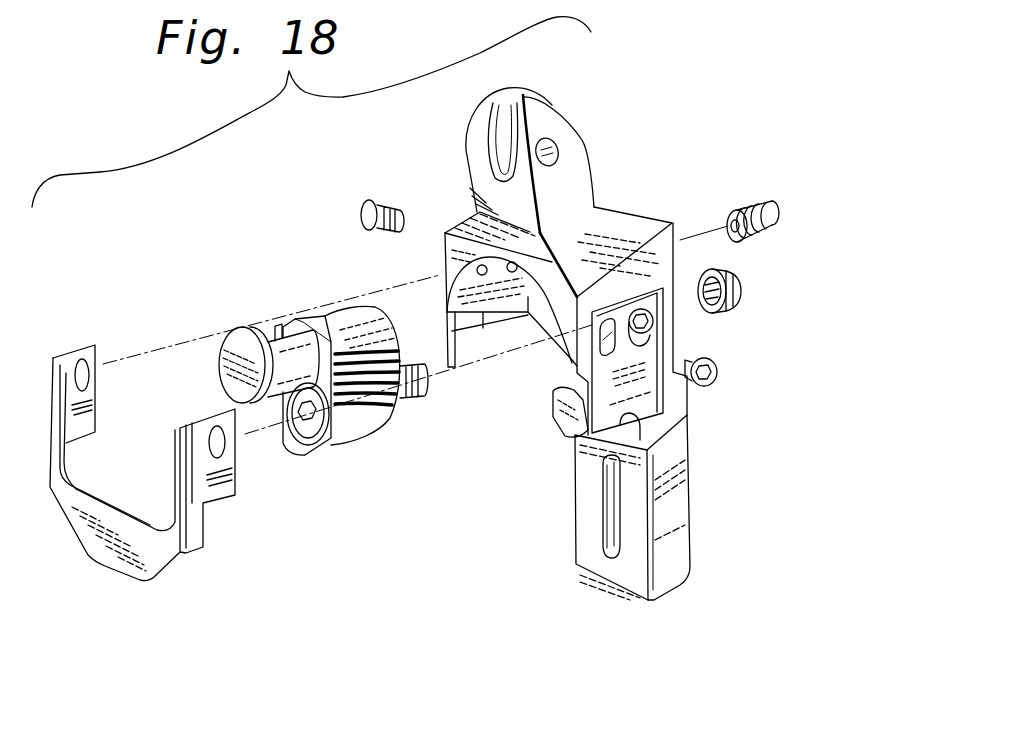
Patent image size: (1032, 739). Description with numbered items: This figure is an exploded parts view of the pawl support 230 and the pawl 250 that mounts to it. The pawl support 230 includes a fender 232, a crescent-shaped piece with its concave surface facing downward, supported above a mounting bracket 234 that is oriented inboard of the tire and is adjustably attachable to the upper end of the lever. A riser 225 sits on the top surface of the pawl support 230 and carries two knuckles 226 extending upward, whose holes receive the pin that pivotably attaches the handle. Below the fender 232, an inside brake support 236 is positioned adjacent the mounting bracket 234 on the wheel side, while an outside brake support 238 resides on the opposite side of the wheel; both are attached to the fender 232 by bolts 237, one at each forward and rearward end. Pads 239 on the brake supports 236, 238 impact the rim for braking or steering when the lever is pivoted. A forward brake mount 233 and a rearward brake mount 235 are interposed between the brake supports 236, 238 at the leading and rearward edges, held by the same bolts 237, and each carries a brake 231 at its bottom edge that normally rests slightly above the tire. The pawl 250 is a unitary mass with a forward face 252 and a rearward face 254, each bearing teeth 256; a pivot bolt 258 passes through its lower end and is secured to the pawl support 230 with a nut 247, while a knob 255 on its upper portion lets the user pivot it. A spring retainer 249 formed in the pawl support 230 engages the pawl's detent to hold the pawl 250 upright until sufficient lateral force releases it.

The riser 225 is at (582, 342).
The knuckles 226 is at (556, 125).
The pawl support 230 is at (650, 210).
The brake 231 is at (502, 366).
The fender 232 is at (455, 236).
The forward brake mount 233 is at (686, 412).
The mounting bracket 234 is at (678, 540).
The rearward brake mount 235 is at (485, 348).
The inside brake support 236 is at (546, 373).
The bolts 237 is at (355, 200).
The outside brake support 238 is at (153, 555).
The pads 239 is at (558, 400).
The nut 247 is at (745, 292).
The spring retainer 249 is at (768, 200).
The pawl 250 is at (326, 369).
The forward face 252 is at (355, 425).
The rearward face 254 is at (277, 326).
The knob 255 is at (220, 363).
The teeth 256 is at (357, 352).
The pivot bolt 258 is at (307, 428).